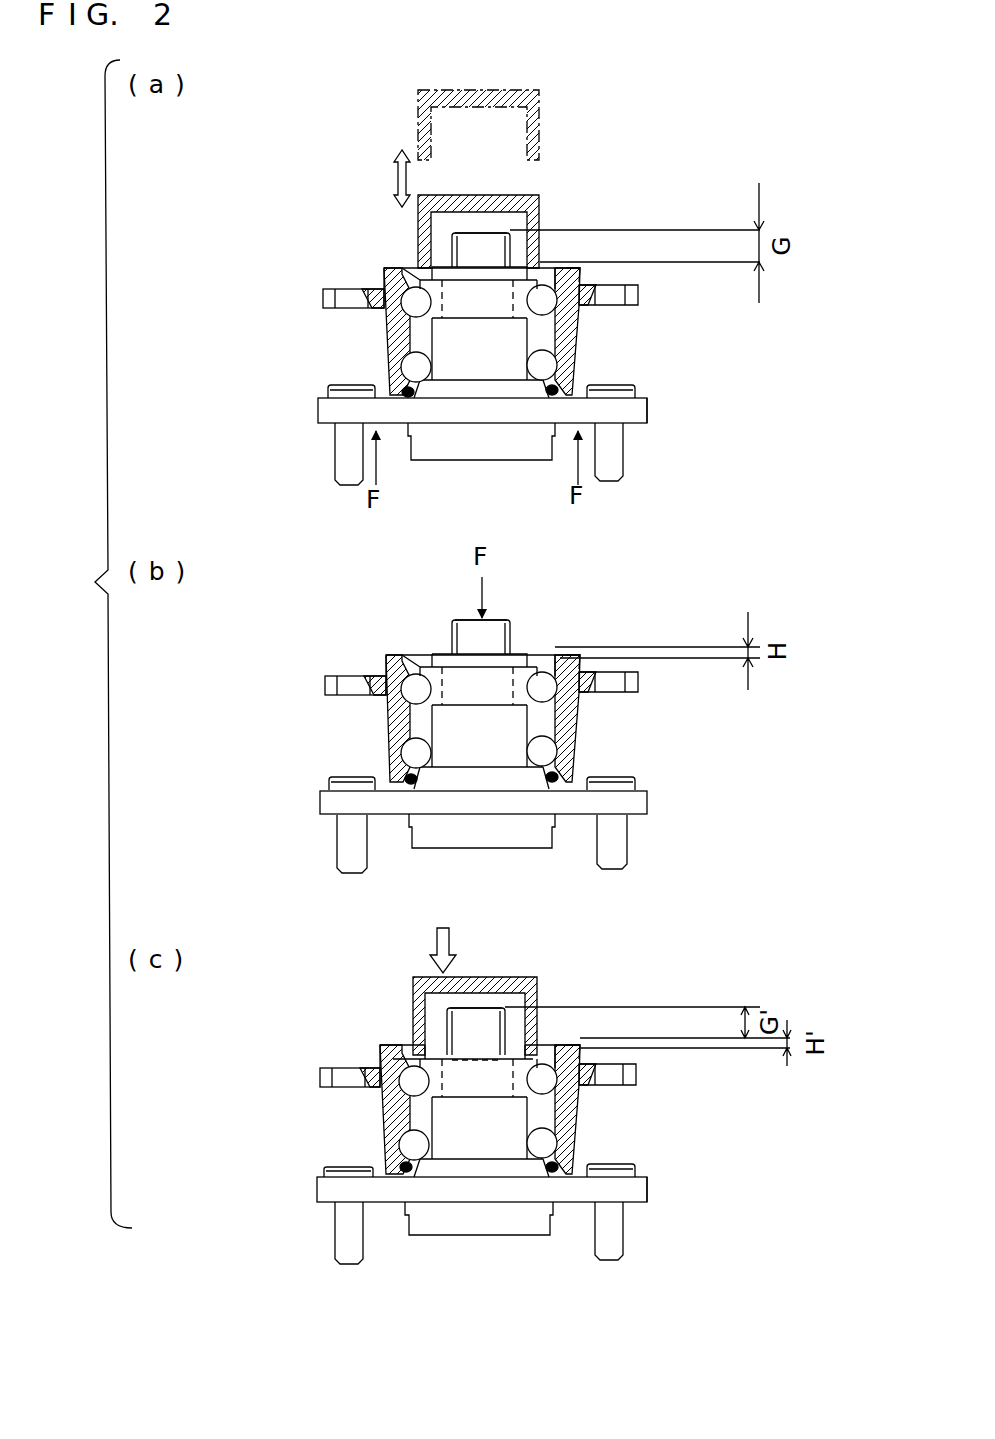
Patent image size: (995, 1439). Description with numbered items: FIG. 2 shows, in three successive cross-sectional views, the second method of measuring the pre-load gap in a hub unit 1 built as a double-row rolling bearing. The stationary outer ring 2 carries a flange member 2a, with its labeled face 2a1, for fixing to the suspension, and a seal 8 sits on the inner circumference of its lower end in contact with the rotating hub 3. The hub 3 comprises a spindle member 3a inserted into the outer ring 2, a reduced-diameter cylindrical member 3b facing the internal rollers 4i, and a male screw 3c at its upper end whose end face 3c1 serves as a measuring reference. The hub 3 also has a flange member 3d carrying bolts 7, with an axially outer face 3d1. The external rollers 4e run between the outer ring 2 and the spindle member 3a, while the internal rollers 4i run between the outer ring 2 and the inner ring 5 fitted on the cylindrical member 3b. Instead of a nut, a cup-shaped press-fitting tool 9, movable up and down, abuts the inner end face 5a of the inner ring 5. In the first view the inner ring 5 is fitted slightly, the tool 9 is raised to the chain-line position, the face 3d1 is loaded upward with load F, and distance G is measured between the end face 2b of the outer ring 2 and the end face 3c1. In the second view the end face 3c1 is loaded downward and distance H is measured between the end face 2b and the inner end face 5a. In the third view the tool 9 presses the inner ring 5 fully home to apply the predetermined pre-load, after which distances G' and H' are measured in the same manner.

The hub unit 1 is at (500, 226).
The outer ring 2 is at (390, 350).
The flange member 2a is at (323, 300).
The flange end face 2a1 is at (638, 230).
The end face 2b is at (582, 282).
The hub 3 is at (454, 455).
The spindle member 3a is at (505, 343).
The cylindrical member 3b is at (382, 276).
The male screw 3c is at (432, 242).
The end face 3c1 is at (497, 232).
The flange member 3d is at (633, 414).
The face 3d1 is at (644, 426).
The internal rollers 4i is at (548, 297).
The external rollers 4e is at (551, 367).
The inner ring 5 is at (440, 298).
The inner end face 5a is at (560, 268).
The bolts 7 is at (345, 388).
The seal 8 is at (406, 398).
The press-fitting tool 9 is at (540, 103).